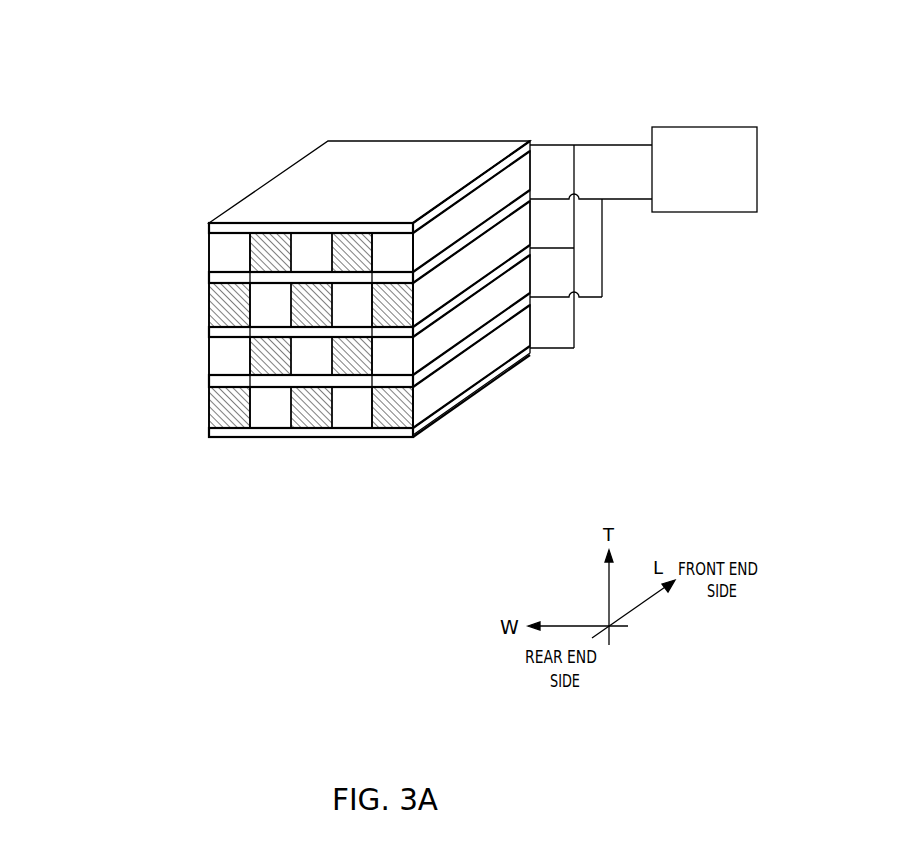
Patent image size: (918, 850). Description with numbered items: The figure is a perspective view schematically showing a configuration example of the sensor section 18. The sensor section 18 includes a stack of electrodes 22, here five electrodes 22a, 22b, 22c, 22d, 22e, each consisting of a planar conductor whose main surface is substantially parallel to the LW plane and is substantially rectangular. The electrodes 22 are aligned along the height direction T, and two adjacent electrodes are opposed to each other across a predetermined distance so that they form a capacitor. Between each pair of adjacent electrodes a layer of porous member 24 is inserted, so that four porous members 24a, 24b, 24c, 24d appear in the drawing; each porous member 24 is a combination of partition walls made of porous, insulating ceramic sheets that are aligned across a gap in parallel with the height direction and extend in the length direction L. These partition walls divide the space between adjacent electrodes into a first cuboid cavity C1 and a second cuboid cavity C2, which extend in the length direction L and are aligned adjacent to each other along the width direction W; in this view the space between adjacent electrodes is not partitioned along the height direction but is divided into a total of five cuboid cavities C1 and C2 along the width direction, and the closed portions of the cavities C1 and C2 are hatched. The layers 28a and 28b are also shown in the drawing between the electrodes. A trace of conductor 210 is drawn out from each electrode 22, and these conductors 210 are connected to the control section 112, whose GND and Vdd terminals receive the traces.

The sensor section 18 is at (90, 40).
The electrodes 22 is at (326, 261).
The electrode 22a is at (232, 220).
The electrode 22b is at (210, 282).
The electrode 22c is at (210, 331).
The electrode 22d is at (210, 383).
The electrode 22e is at (210, 433).
The electrode layer 28a is at (210, 270).
The electrode layer 28b is at (210, 372).
The porous member 24 is at (567, 331).
The porous member 24a is at (503, 187).
The porous member 24b is at (470, 262).
The porous member 24c is at (442, 333).
The porous member 24d is at (422, 402).
The control section 112 is at (758, 146).
The conductor 210 is at (582, 100).
The first cuboid cavity C1 is at (229, 412).
The second cuboid cavity C2 is at (268, 412).